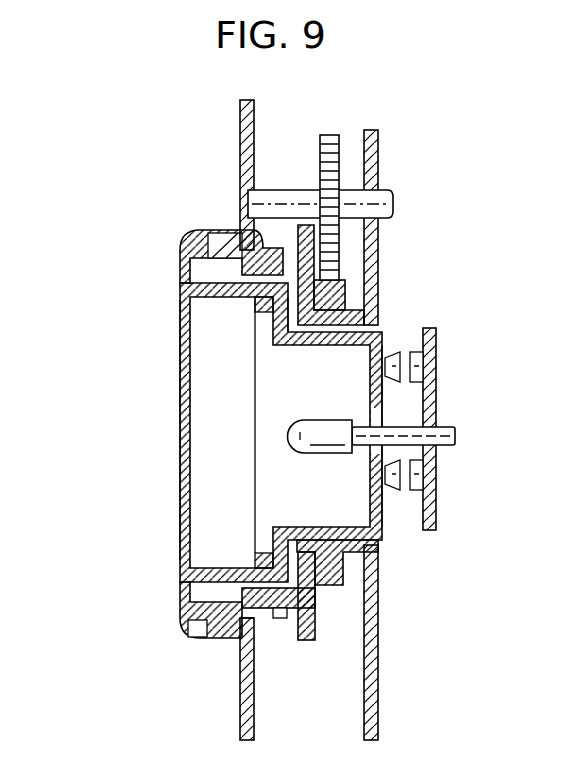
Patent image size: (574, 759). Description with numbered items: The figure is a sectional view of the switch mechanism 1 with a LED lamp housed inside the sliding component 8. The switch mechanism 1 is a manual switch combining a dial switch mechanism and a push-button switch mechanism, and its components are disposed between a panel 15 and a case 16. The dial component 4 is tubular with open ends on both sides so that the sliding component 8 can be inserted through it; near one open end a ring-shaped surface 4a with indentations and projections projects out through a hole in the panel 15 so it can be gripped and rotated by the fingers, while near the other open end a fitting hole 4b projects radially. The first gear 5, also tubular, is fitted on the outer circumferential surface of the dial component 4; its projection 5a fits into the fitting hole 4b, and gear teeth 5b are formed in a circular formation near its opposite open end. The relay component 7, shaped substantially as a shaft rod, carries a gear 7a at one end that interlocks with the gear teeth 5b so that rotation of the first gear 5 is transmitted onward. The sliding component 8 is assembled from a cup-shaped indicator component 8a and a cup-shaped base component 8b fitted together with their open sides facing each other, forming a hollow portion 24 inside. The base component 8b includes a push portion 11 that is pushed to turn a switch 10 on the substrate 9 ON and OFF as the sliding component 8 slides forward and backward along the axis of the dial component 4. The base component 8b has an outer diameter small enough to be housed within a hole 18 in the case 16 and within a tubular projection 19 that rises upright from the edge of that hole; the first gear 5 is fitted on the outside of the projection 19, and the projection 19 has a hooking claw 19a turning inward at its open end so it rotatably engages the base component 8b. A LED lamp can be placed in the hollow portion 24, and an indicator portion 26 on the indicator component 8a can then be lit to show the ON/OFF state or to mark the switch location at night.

The switch mechanism 1 is at (172, 237).
The dial component 4 is at (178, 263).
The ring-shaped surface 4a is at (190, 630).
The fitting hole 4b is at (240, 222).
The first gear 5 is at (242, 600).
The projection 5a is at (262, 620).
The gear teeth 5b is at (333, 583).
The relay component 7 is at (277, 190).
The gear 7a is at (327, 133).
The sliding component 8 is at (182, 485).
The indicator component 8a is at (182, 400).
The base component 8b is at (270, 327).
The substrate 9 is at (443, 333).
The switch 10 is at (437, 360).
The push portion 11 is at (383, 336).
The panel 15 is at (240, 122).
The case 16 is at (379, 143).
The hole 18 is at (398, 331).
The tubular projection 19 is at (353, 307).
The hooking claw 19a is at (378, 560).
The hollow portion 24 is at (236, 490).
The indicator portion 26 is at (312, 432).